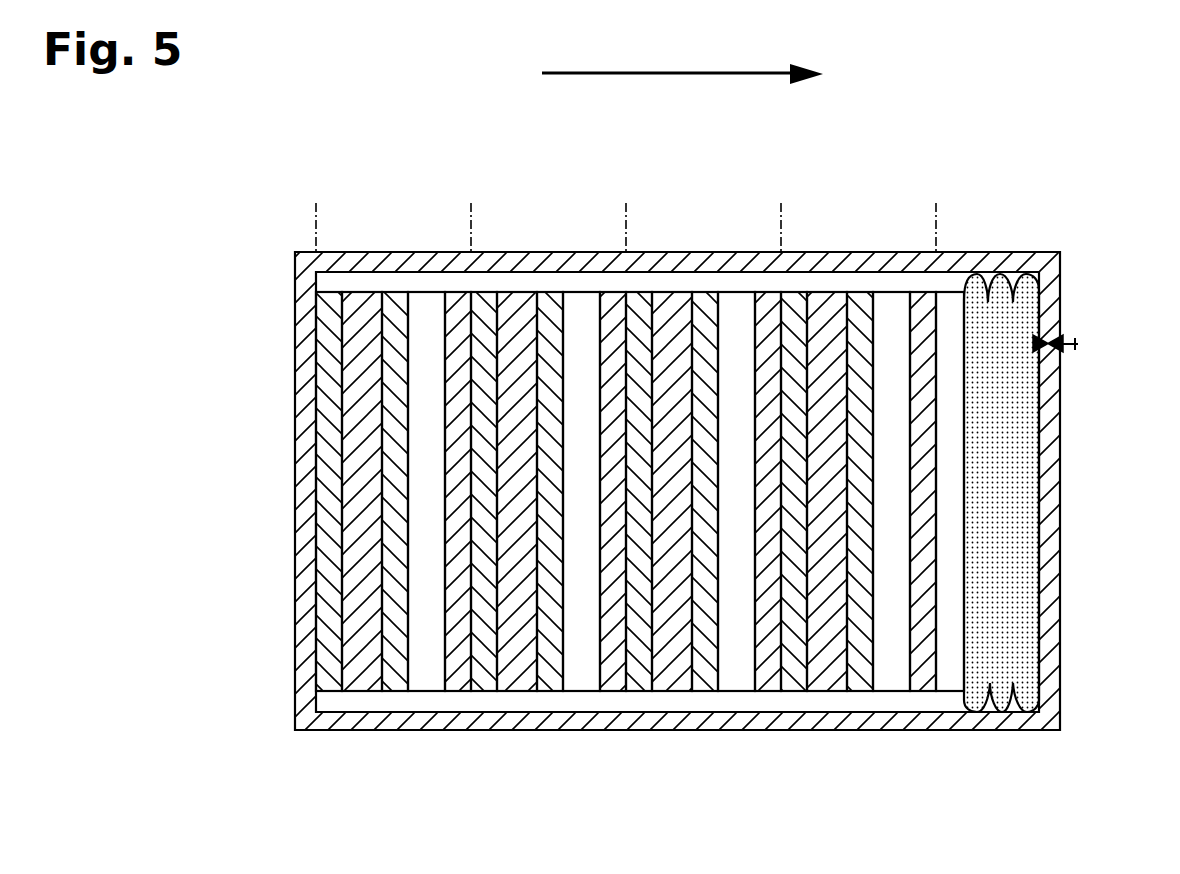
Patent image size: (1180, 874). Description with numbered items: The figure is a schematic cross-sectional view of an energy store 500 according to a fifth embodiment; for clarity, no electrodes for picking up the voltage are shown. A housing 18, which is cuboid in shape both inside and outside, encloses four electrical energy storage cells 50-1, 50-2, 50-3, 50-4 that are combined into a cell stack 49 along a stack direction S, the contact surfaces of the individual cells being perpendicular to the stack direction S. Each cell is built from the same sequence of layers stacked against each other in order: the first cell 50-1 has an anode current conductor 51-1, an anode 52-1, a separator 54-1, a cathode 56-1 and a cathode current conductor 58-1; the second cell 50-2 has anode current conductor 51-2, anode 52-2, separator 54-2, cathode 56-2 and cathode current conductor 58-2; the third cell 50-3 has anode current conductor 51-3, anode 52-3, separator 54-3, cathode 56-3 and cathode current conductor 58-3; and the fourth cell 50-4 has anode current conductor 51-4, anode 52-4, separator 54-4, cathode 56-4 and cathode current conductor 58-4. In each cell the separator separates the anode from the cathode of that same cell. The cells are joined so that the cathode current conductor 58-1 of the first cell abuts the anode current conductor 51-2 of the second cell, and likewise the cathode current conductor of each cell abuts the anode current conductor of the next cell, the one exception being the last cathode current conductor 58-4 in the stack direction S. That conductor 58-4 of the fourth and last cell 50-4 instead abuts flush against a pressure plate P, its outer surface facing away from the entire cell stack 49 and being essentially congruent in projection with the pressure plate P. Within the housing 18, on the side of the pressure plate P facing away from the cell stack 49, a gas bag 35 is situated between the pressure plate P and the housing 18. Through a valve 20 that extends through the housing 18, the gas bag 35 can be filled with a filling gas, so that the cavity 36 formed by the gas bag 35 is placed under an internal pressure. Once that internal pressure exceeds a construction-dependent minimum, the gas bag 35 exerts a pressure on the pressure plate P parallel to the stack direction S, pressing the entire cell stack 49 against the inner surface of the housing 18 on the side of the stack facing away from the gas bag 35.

The energy store 500 is at (142, 141).
The housing 18 is at (1050, 282).
The valve 20 is at (1064, 344).
The cavity 36 is at (1020, 472).
The gas bag 35 is at (1030, 712).
The cell stack 49 is at (900, 131).
The stack direction S is at (560, 73).
The pressure plate P is at (950, 675).
The first energy storage cell 50-1 is at (472, 192).
The second energy storage cell 50-2 is at (627, 192).
The third energy storage cell 50-3 is at (782, 192).
The fourth energy storage cell 50-4 is at (937, 192).
The anode current conductor 51-1 is at (323, 680).
The anode 52-1 is at (362, 306).
The separator 54-1 is at (397, 680).
The cathode 56-1 is at (423, 307).
The cathode current conductor 58-1 is at (462, 680).
The anode current conductor 51-2 is at (478, 680).
The anode 52-2 is at (517, 306).
The separator 54-2 is at (550, 680).
The cathode 56-2 is at (578, 307).
The cathode current conductor 58-2 is at (605, 680).
The anode current conductor 51-3 is at (635, 677).
The anode 52-3 is at (672, 306).
The separator 54-3 is at (702, 680).
The cathode 56-3 is at (733, 307).
The cathode current conductor 58-3 is at (767, 677).
The anode current conductor 51-4 is at (790, 677).
The anode 52-4 is at (827, 306).
The separator 54-4 is at (860, 680).
The cathode 56-4 is at (888, 307).
The cathode current conductor 58-4 is at (922, 677).